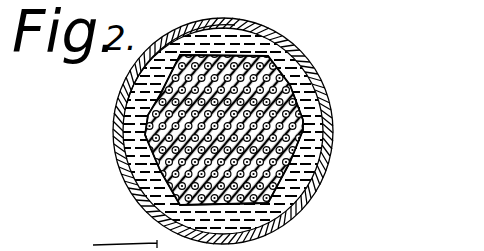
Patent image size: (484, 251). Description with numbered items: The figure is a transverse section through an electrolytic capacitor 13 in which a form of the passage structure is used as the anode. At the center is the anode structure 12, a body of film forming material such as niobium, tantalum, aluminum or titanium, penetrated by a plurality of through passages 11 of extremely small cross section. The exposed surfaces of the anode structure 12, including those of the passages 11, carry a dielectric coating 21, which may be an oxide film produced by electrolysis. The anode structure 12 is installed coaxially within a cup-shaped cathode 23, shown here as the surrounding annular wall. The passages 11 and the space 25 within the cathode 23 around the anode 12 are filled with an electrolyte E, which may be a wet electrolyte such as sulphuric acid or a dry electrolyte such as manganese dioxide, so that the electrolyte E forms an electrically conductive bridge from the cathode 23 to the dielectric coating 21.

The electrolyte E is at (226, 38).
The space 25 is at (282, 60).
The electrolytic capacitor 13 is at (332, 81).
The cup-shaped cathode 23 is at (328, 145).
The anode structure 12 is at (150, 110).
The through passages 11 is at (122, 156).
The dielectric coating 21 is at (152, 192).